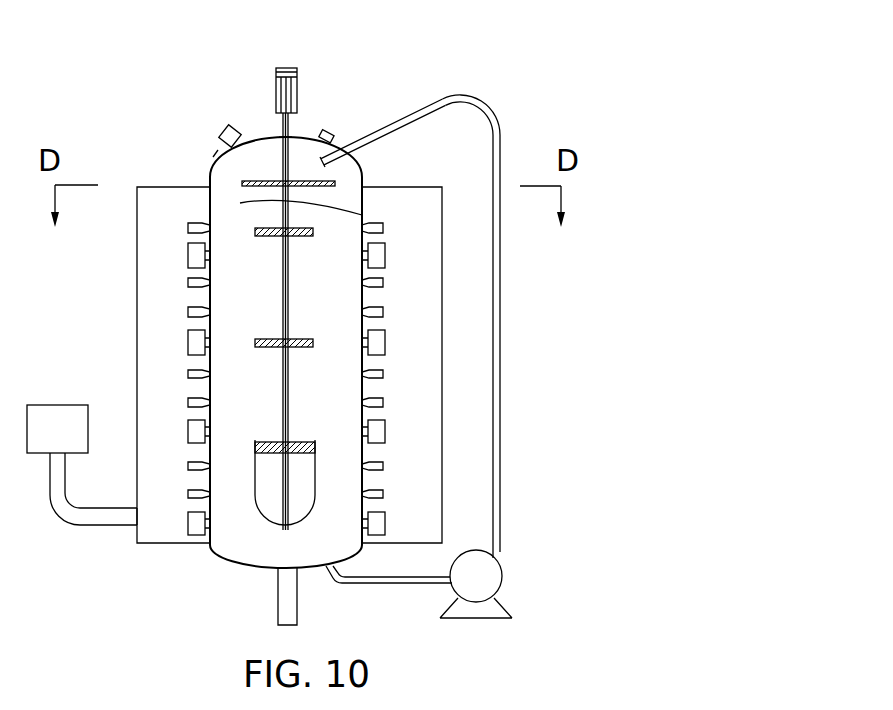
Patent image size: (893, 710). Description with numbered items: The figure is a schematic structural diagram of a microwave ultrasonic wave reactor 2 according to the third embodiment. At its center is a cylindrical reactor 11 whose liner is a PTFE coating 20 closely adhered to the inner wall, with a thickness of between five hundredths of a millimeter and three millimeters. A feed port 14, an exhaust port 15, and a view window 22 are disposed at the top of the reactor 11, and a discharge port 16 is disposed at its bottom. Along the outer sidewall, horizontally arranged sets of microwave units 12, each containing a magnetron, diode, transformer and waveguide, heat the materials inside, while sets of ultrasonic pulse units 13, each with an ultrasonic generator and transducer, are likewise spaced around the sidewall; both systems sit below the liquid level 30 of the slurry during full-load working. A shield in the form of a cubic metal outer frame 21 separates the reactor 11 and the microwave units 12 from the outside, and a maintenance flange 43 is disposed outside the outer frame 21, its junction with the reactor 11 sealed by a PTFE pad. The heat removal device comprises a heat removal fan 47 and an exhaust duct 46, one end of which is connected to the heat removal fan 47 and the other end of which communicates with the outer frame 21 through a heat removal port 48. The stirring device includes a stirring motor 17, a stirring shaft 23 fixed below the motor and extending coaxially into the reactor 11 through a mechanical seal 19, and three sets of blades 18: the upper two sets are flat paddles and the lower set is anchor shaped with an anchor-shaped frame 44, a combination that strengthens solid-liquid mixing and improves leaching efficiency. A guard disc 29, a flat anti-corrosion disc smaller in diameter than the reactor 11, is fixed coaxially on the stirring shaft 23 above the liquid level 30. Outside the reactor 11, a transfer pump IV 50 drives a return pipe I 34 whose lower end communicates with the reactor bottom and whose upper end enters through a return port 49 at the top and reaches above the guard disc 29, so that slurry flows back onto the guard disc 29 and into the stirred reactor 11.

The microwave ultrasonic wave reactor 2 is at (117, 53).
The reactor 11 is at (225, 555).
The microwave unit 12 is at (383, 335).
The ultrasonic pulse unit 13 is at (197, 373).
The feed port 14 is at (229, 132).
The exhaust port 15 is at (328, 137).
The discharge port 16 is at (287, 593).
The stirring motor 17 is at (277, 90).
The blades 18 is at (296, 340).
The mechanical seal 19 is at (288, 136).
The PTFE coating 20 is at (253, 568).
The outer frame 21 is at (137, 348).
The view window 22 is at (213, 157).
The stirring shaft 23 is at (285, 302).
The guard disc 29 is at (320, 186).
The liquid level 30 is at (240, 203).
The return pipe I 34 is at (498, 338).
The maintenance flange 43 is at (210, 177).
The anchor-shaped frame 44 is at (258, 506).
The exhaust duct 46 is at (93, 525).
The heat removal fan 47 is at (50, 428).
The heat removal port 48 is at (137, 528).
The return port 49 is at (350, 150).
The transfer pump IV 50 is at (483, 585).